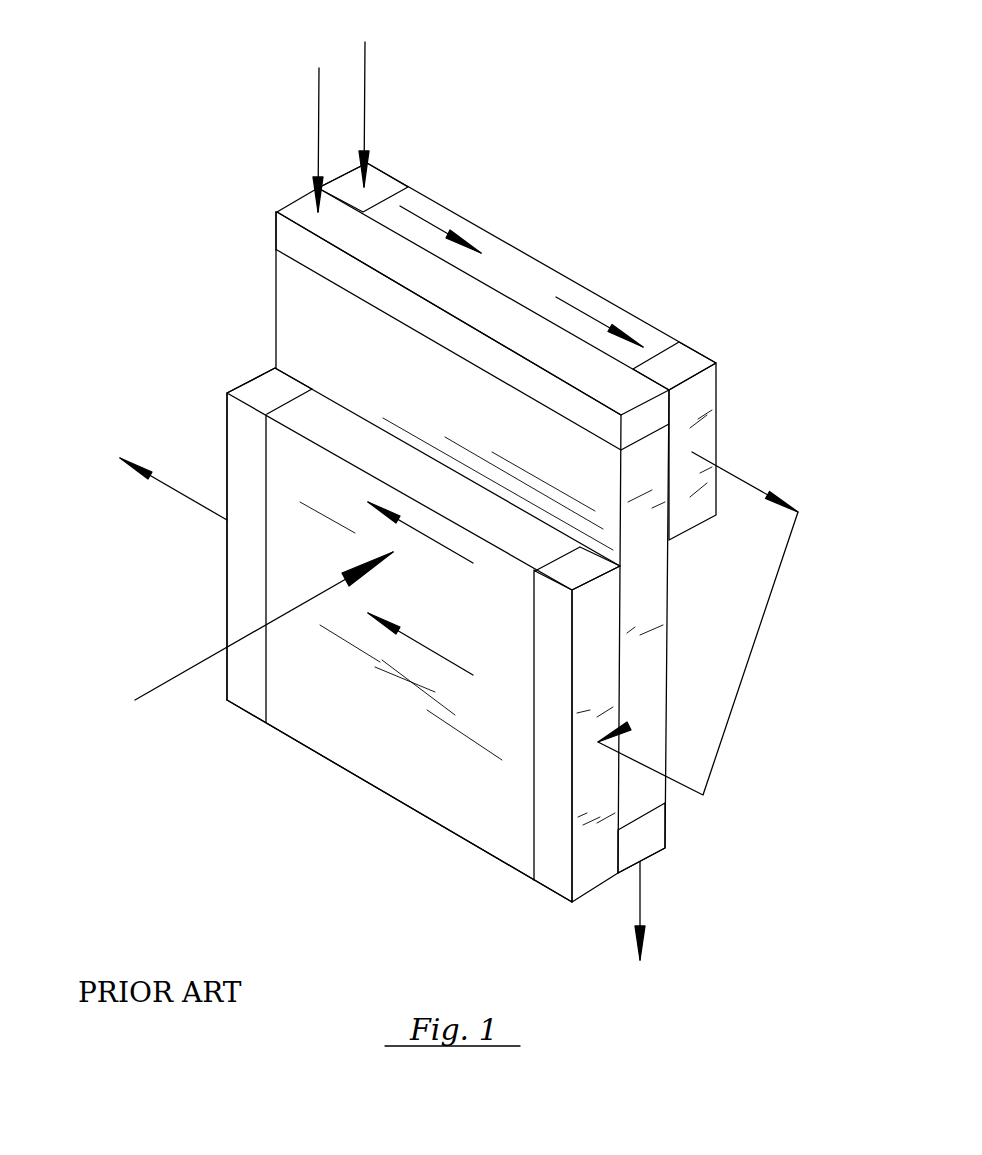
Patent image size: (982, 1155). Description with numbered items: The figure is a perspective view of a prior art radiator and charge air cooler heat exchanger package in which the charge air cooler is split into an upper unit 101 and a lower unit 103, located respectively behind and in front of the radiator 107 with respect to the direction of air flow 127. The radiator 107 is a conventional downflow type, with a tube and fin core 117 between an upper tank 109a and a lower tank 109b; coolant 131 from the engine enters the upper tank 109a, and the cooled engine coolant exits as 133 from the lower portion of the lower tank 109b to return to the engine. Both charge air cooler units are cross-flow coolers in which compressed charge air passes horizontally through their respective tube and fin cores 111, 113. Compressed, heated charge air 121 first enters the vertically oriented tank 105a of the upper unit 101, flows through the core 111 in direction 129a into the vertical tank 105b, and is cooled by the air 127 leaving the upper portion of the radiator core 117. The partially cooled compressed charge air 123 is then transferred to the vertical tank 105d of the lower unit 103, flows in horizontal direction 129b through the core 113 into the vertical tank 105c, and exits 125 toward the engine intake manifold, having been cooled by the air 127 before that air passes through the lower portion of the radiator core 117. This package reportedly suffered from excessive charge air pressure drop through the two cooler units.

The upper unit 101 is at (613, 143).
The lower unit 103 is at (263, 866).
The vertically oriented tank 105a is at (385, 181).
The vertical tank 105b is at (708, 402).
The vertical tank 105c is at (238, 567).
The vertical tank 105d is at (547, 877).
The radiator 107 is at (200, 323).
The upper tank 109a is at (280, 233).
The lower tank 109b is at (657, 833).
The tube and fin core 111 is at (572, 287).
The tube and fin core 113 is at (318, 740).
The tube and fin core 117 is at (362, 367).
The compressed, heated charge air 121 is at (365, 72).
The partially cooled compressed charge air 123 is at (752, 655).
The charge air exit 125 is at (145, 482).
The air flow 127 is at (195, 666).
The direction 129a is at (438, 224).
The horizontal direction 129b is at (435, 543).
The coolant 131 is at (318, 113).
The cooled engine coolant 133 is at (640, 915).